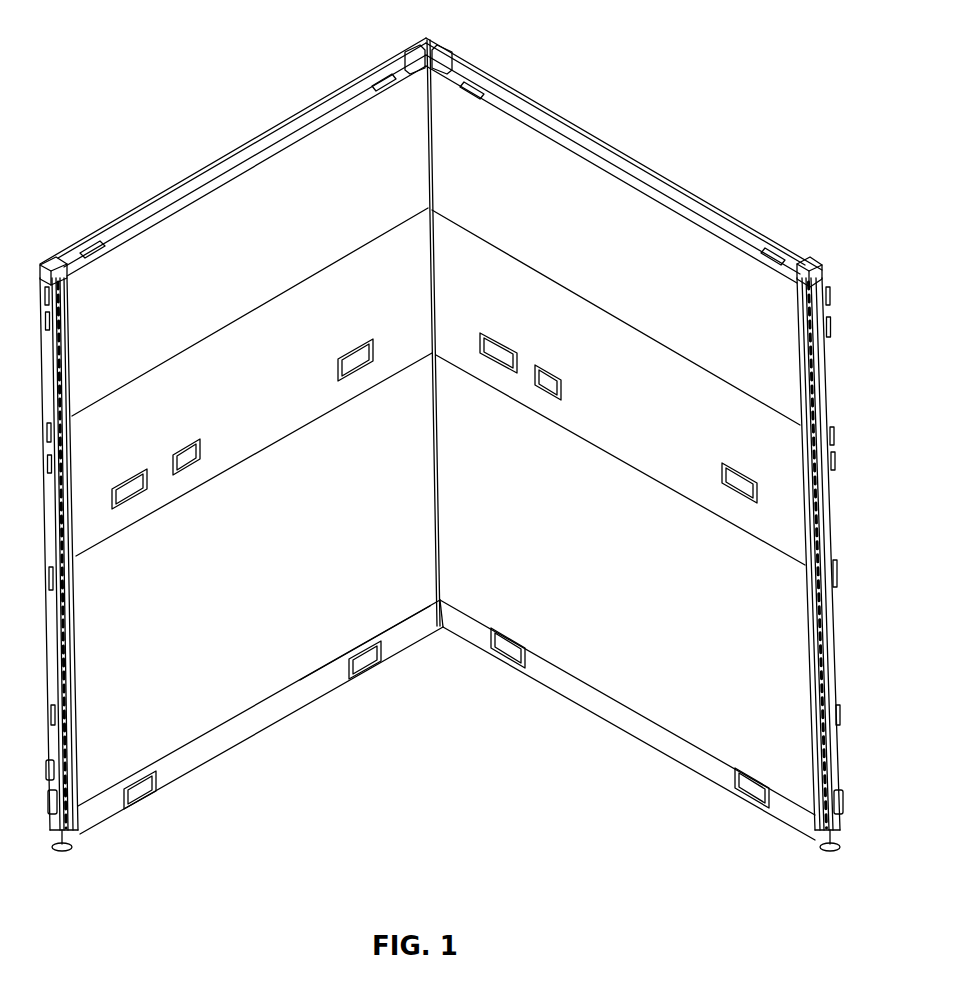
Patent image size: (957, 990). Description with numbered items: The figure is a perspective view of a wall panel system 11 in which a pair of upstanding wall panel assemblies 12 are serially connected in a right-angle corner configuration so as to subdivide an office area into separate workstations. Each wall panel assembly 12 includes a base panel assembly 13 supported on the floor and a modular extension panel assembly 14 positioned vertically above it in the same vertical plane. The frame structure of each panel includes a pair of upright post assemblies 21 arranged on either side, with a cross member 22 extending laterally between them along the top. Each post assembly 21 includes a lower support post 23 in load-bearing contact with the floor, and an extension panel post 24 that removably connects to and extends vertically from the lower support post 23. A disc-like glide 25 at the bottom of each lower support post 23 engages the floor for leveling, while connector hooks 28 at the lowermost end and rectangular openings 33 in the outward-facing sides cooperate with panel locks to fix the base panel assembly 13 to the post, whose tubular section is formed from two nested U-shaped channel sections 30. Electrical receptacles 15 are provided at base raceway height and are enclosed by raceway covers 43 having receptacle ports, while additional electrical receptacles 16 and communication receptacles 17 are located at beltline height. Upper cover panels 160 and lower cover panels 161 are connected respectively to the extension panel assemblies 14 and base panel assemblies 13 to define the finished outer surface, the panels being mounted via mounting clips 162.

The wall panel system 11 is at (553, 78).
The wall panel assembly 12 is at (183, 175).
The base panel assembly 13 is at (208, 692).
The extension panel assembly 14 is at (275, 187).
The electrical receptacle 15 is at (365, 668).
The electrical receptacle 16 is at (125, 478).
The communication receptacle 17 is at (185, 445).
The upright post assembly 21 is at (838, 508).
The cross member 22 is at (120, 247).
The lower support post 23 is at (75, 722).
The extension panel post 24 is at (822, 355).
The glide 25 is at (65, 852).
The connector hook 28 is at (70, 792).
The U-shaped channel section 30 is at (828, 715).
The rectangular opening 33 is at (58, 600).
The raceway cover 43 is at (292, 700).
The upper cover panel 160 is at (210, 249).
The lower cover panel 161 is at (350, 467).
The mounting clip 162 is at (470, 88).